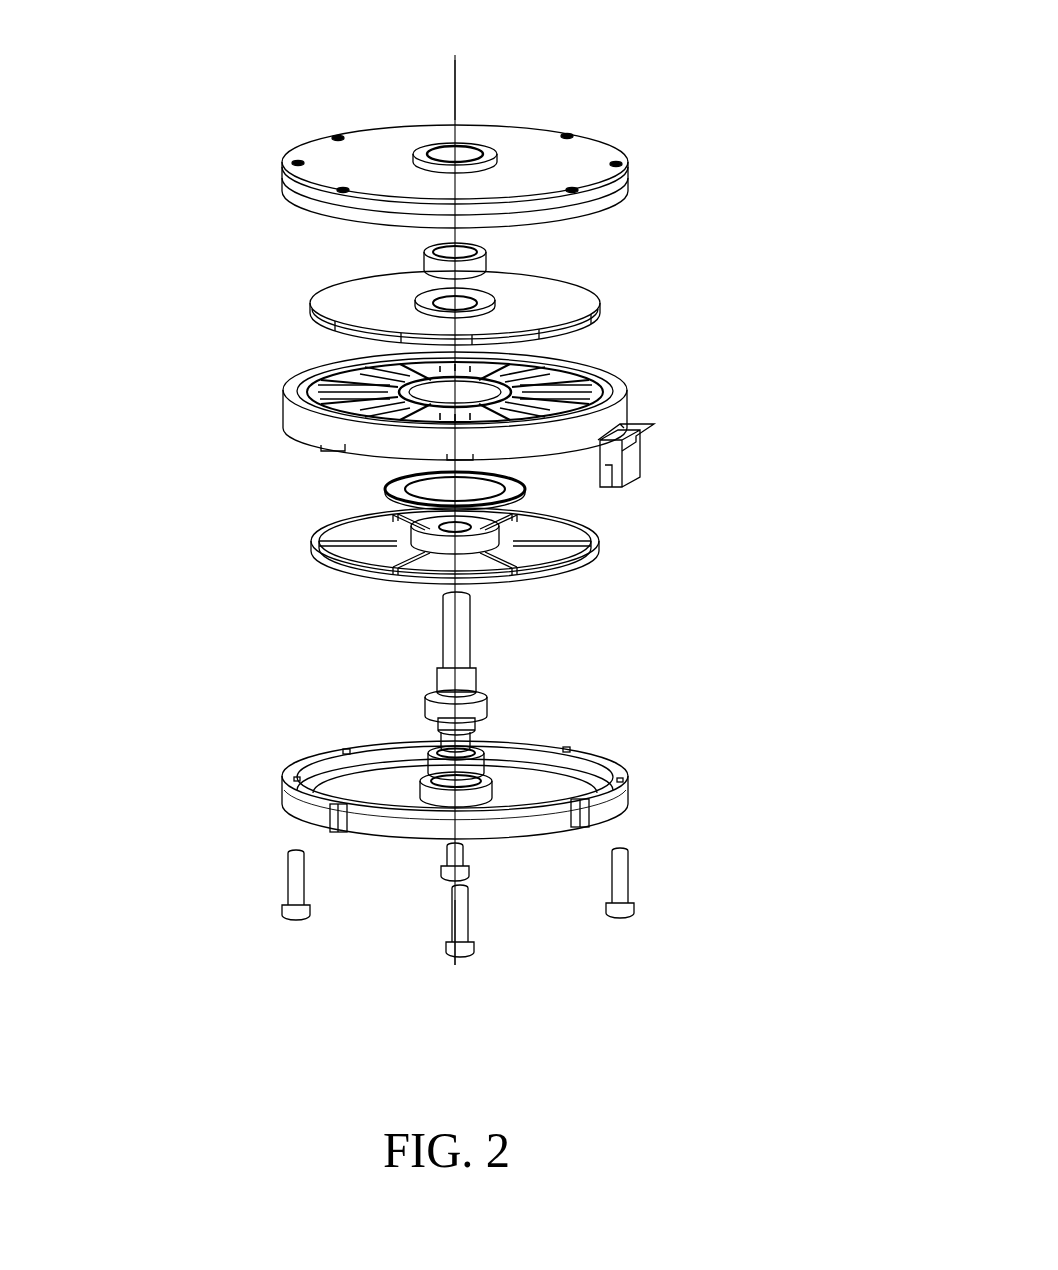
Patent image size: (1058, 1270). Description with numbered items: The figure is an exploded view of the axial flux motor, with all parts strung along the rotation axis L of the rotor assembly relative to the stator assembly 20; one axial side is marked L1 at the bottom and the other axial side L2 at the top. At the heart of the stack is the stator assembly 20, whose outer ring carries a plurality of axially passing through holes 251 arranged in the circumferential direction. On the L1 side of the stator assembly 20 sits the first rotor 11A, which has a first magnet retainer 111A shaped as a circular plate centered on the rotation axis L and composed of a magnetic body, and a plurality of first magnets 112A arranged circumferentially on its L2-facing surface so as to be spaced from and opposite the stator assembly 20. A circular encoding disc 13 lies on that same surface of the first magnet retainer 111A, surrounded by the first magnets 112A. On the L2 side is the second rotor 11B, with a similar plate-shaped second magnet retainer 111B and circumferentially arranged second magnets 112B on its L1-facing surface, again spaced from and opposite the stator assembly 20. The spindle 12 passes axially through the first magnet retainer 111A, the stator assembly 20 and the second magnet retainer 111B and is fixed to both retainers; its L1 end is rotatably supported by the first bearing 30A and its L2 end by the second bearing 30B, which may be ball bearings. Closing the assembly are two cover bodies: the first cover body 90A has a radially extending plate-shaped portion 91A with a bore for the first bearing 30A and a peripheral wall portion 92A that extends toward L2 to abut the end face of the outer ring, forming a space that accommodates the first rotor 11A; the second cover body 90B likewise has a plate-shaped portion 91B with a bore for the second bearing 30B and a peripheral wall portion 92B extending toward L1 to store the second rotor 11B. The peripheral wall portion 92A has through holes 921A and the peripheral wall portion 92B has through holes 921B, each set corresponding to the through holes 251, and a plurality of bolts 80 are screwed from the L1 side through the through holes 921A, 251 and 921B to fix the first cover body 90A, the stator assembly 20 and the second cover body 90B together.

The second cover body 90B is at (268, 152).
The plate-shaped portion 91B is at (595, 153).
The peripheral wall portion 92B is at (613, 183).
The through holes 921B is at (567, 137).
The second bearing 30B is at (483, 263).
The second rotor 11B is at (600, 292).
The second magnet retainer 111B is at (337, 293).
The second magnets 112B is at (337, 325).
The stator assembly 20 is at (622, 372).
The through holes 251 is at (282, 393).
The encoding disc 13 is at (392, 490).
The first rotor 11A is at (605, 540).
The first magnet retainer 111A is at (317, 553).
The first magnets 112A is at (323, 547).
The spindle 12 is at (465, 640).
The first bearing 30A is at (650, 788).
The first cover body 90A is at (392, 852).
The plate-shaped portion 91A is at (613, 803).
The peripheral wall portion 92A is at (293, 815).
The through holes 921A is at (300, 777).
The bolts 80 is at (622, 888).
The rotation axis L is at (452, 105).
The one side in the axial direction L1 is at (454, 964).
The other side in the axial direction L2 is at (453, 74).